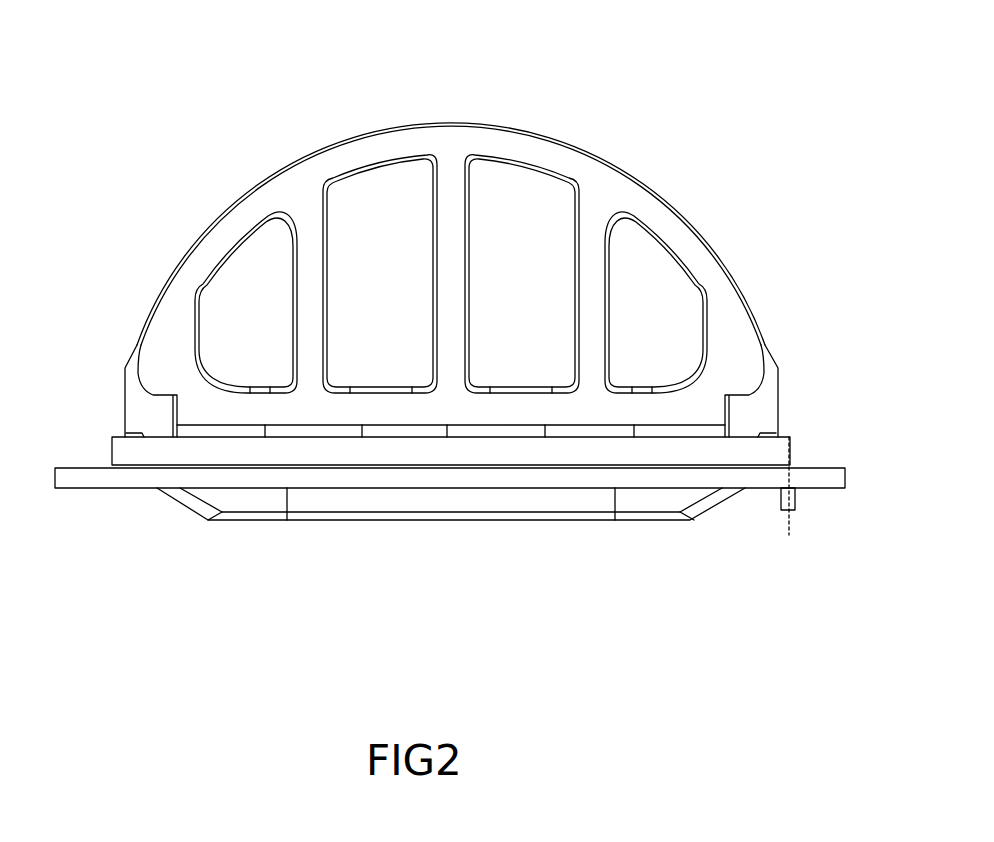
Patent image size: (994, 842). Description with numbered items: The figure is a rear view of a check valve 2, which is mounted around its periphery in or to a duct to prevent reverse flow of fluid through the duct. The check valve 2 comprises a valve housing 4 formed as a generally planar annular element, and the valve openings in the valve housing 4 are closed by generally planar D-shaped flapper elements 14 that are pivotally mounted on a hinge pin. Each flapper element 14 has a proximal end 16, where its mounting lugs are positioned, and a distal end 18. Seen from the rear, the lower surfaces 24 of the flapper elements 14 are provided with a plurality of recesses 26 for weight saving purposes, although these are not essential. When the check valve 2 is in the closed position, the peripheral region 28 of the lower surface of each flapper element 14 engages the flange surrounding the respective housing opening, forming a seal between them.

The check valve 2 is at (216, 577).
The valve housing 4 is at (800, 438).
The flapper element 14 is at (182, 273).
The proximal end 16 is at (686, 422).
The distal end 18 is at (448, 122).
The lower surface 24 is at (605, 193).
The recess 26 is at (525, 350).
The peripheral region 28 is at (300, 157).